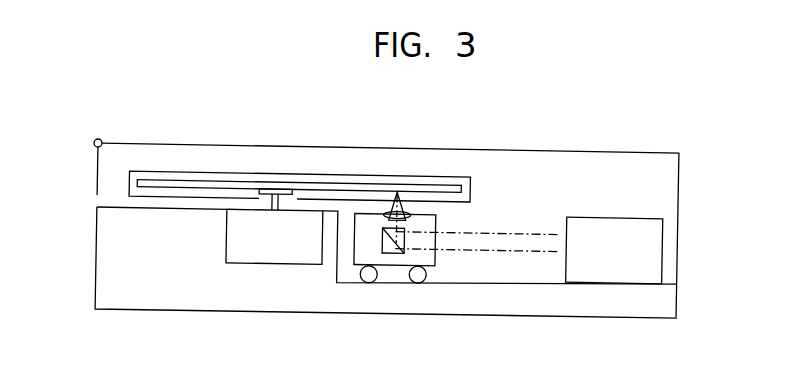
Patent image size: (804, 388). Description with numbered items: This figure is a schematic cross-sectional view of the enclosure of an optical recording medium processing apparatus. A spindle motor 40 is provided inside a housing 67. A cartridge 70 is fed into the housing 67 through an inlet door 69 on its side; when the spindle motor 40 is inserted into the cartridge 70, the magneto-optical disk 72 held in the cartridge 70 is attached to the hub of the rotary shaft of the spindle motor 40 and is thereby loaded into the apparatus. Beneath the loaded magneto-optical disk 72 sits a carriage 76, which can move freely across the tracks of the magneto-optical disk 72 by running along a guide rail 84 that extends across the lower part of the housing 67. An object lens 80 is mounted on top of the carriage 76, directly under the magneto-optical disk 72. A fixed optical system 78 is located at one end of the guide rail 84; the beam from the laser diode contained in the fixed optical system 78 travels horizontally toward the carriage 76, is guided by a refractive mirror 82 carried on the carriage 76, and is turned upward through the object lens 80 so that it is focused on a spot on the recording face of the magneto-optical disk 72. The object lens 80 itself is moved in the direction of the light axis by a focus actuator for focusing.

The spindle motor 40 is at (307, 260).
The housing 67 is at (576, 144).
The inlet door 69 is at (98, 184).
The cartridge 70 is at (200, 170).
The magneto-optical disk 72 is at (399, 188).
The carriage 76 is at (402, 260).
The fixed optical system 78 is at (637, 209).
The object lens 80 is at (409, 208).
The refractive mirror 82 is at (386, 223).
The guide rail 84 is at (472, 276).